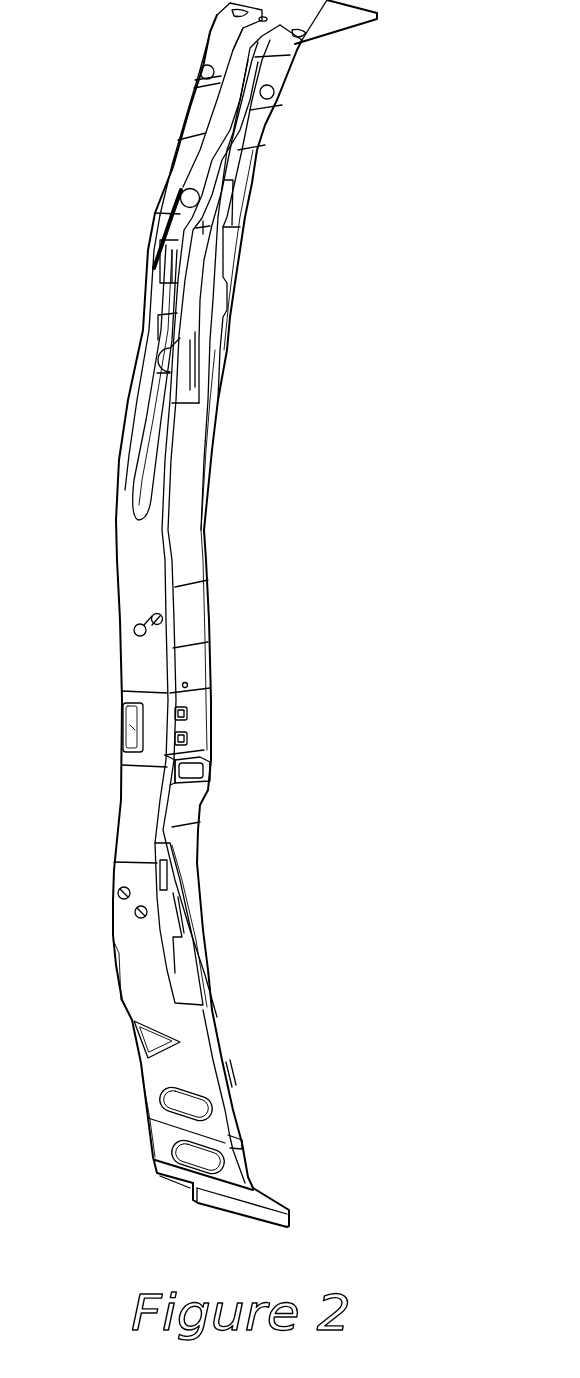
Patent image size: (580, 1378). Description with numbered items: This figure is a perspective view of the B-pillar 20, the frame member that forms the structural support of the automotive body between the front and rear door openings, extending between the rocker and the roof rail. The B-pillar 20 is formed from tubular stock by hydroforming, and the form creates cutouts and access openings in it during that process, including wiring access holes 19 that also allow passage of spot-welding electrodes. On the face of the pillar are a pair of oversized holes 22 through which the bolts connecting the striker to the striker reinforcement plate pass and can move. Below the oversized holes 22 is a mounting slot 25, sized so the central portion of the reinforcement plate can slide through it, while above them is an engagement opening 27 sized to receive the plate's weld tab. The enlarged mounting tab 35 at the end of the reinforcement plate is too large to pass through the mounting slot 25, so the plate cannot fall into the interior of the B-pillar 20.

The B-pillar 20 is at (320, 250).
The wiring access holes 19 is at (123, 722).
The oversized holes 22 is at (187, 738).
The mounting slot 25 is at (208, 779).
The engagement opening 27 is at (187, 684).
The mounting tab 35 is at (170, 772).